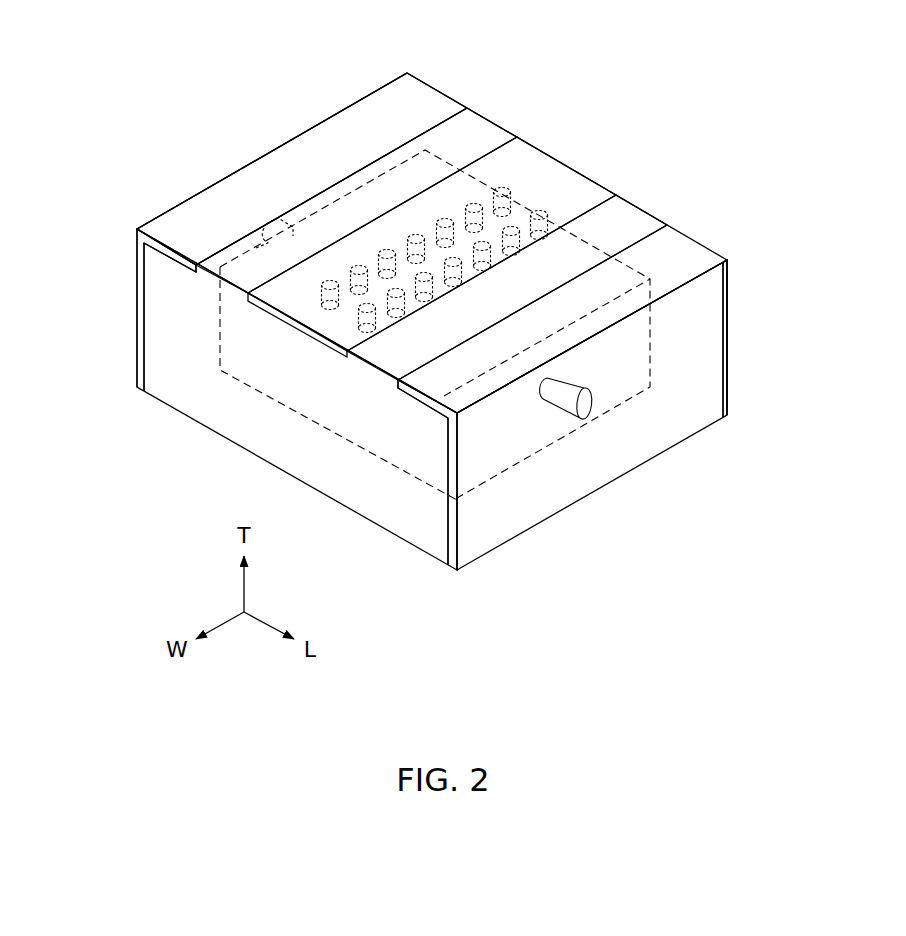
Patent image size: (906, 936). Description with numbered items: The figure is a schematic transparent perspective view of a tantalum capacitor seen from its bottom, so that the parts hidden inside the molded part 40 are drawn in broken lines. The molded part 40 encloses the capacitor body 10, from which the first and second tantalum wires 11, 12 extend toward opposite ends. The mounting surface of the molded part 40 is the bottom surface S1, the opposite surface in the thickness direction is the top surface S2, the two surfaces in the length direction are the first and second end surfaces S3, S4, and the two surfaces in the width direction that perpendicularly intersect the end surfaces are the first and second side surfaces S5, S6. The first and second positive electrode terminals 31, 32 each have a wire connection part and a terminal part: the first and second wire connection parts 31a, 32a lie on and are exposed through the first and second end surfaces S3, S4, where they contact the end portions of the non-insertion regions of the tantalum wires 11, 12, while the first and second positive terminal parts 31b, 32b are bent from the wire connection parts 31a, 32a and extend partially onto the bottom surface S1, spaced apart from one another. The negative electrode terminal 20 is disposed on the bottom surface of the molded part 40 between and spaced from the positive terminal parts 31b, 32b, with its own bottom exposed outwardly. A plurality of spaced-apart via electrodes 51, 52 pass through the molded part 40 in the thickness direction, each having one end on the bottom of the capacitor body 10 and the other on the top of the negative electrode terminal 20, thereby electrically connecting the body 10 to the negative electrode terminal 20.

The capacitor body 10 is at (277, 383).
The first tantalum wire 11 is at (598, 383).
The second tantalum wire 12 is at (278, 218).
The negative electrode terminal 20 is at (597, 185).
The first positive electrode terminal 31 is at (727, 162).
The first wire connection part 31a is at (717, 303).
The first positive terminal part 31b is at (690, 252).
The second positive electrode terminal 32 is at (92, 117).
The second wire connection part 32a is at (137, 290).
The second positive terminal part 32b is at (210, 193).
The molded part 40 is at (478, 137).
The via electrode 51 is at (539, 207).
The via electrode 52 is at (503, 187).
The bottom surface S1 is at (392, 117).
The top surface S2 is at (563, 483).
The first end surface S3 is at (307, 165).
The second end surface S4 is at (709, 340).
The first side surface S5 is at (619, 225).
The second side surface S6 is at (173, 346).